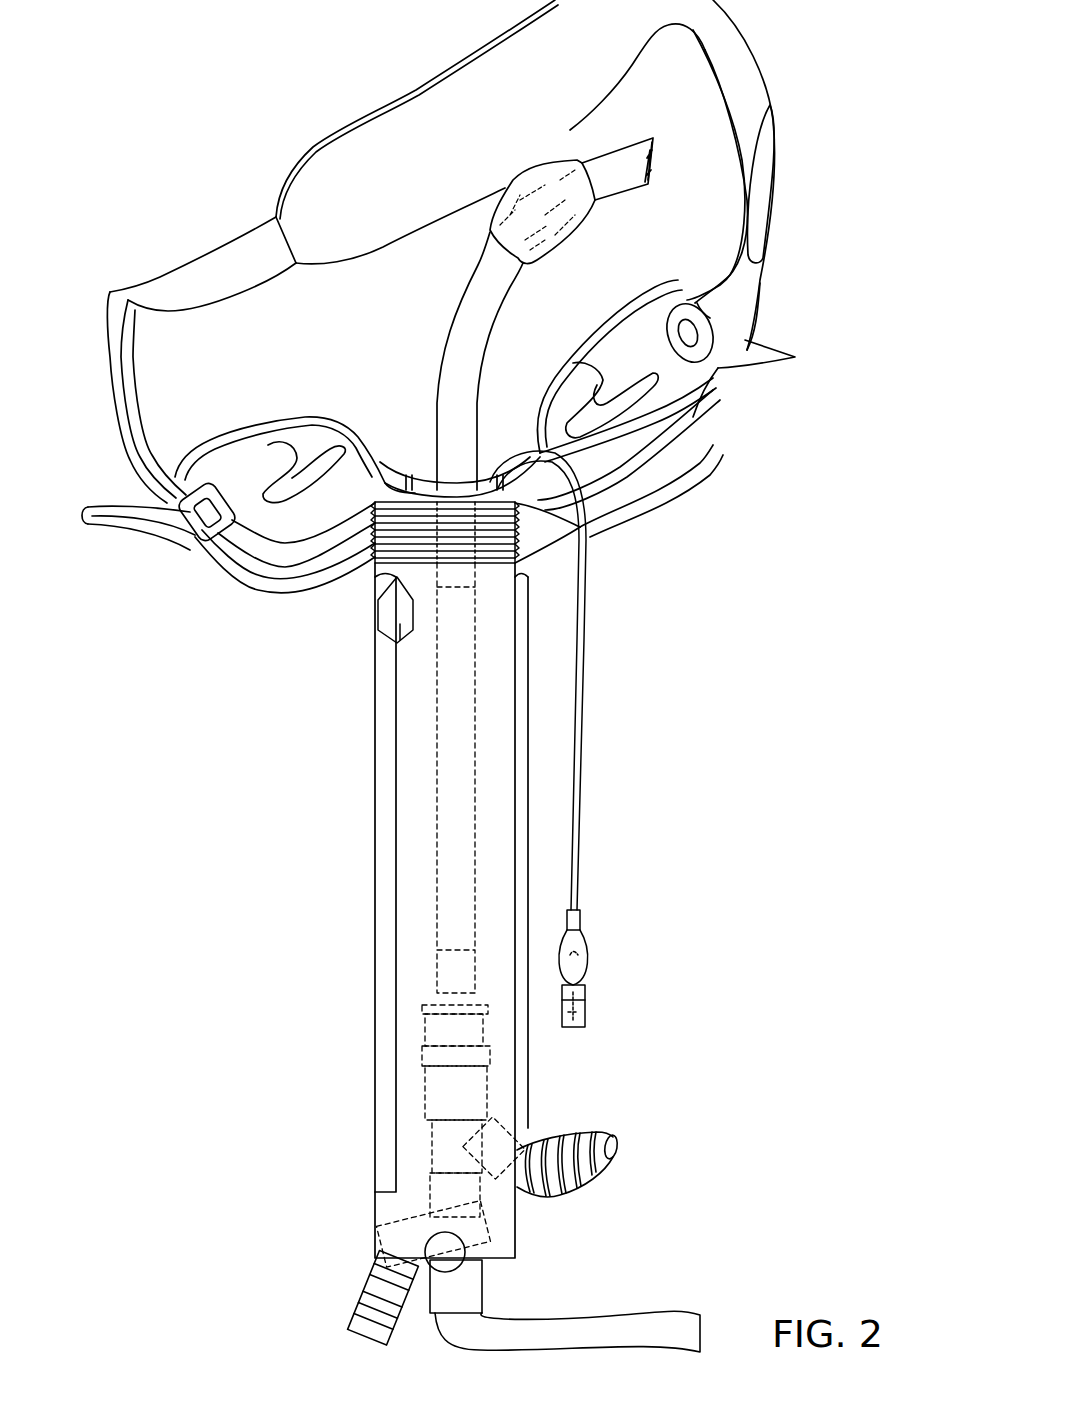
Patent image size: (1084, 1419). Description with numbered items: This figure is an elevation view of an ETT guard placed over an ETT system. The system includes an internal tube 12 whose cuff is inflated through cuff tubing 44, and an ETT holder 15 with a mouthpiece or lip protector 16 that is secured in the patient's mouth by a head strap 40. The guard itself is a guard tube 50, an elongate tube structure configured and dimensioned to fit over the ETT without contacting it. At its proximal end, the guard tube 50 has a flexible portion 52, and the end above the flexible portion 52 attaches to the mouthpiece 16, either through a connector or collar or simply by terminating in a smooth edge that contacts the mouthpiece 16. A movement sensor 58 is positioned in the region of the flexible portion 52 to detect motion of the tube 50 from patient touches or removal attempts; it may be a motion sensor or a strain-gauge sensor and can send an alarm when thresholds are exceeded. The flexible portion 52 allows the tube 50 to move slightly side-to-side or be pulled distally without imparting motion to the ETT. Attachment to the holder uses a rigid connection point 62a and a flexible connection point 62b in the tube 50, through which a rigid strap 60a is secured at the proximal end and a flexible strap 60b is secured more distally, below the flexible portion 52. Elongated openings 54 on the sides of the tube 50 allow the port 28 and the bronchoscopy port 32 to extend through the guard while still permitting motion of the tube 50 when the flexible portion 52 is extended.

The ETT holder 15 is at (240, 213).
The internal tube 12 is at (475, 262).
The mouthpiece or lip protector 16 is at (413, 477).
The head strap 40 is at (733, 277).
The rigid connection point 62a is at (707, 397).
The flexible connection point 62b is at (693, 437).
The rigid strap 60a is at (210, 537).
The flexible strap 60b is at (237, 585).
The flexible portion 52 is at (377, 562).
The movement sensor 58 is at (400, 650).
The cuff tubing 44 is at (582, 737).
The guard tube 50 is at (483, 797).
The elongated openings 54 is at (530, 862).
The vent tube port 28 is at (530, 1140).
The bronchoscopy port 32 is at (368, 1280).